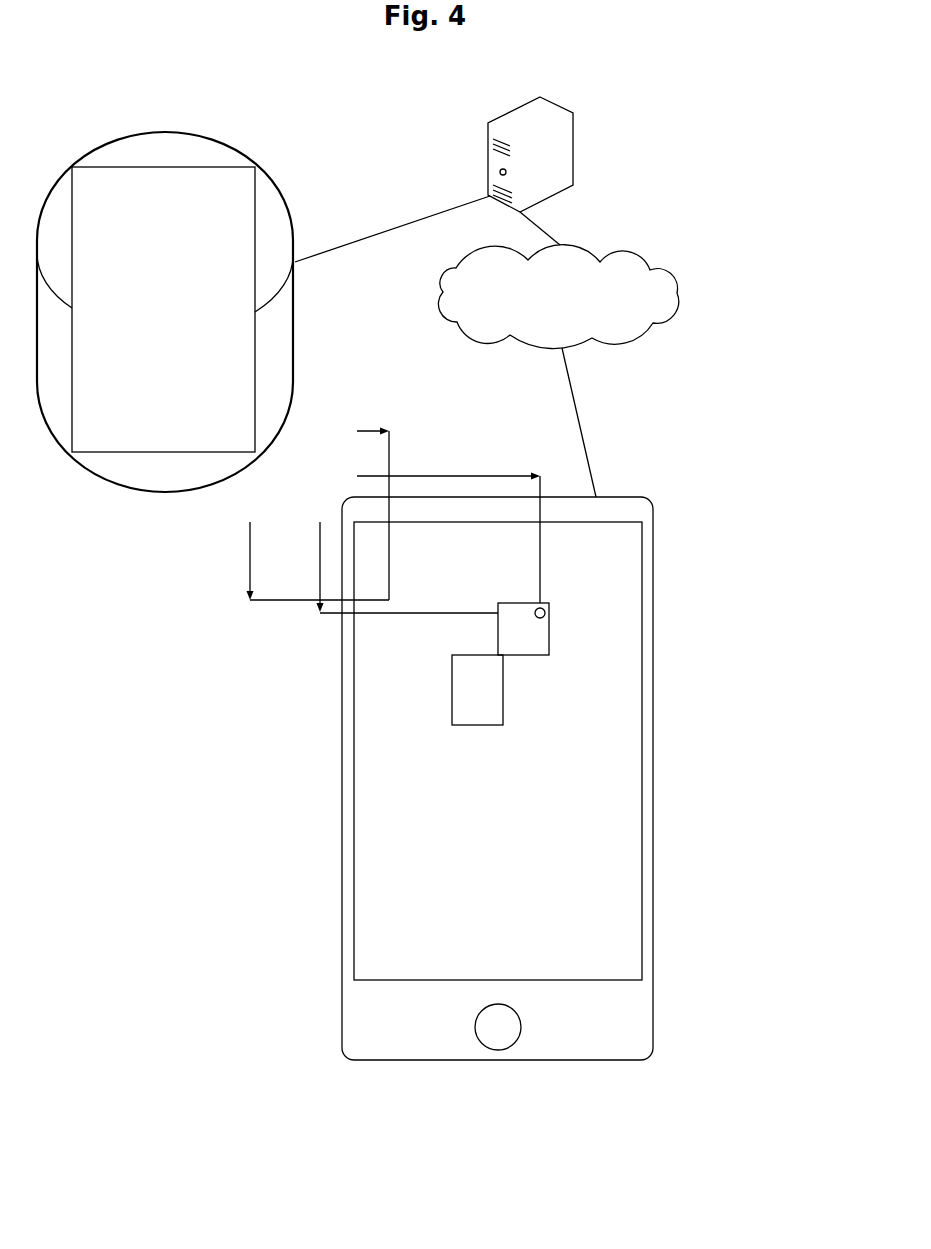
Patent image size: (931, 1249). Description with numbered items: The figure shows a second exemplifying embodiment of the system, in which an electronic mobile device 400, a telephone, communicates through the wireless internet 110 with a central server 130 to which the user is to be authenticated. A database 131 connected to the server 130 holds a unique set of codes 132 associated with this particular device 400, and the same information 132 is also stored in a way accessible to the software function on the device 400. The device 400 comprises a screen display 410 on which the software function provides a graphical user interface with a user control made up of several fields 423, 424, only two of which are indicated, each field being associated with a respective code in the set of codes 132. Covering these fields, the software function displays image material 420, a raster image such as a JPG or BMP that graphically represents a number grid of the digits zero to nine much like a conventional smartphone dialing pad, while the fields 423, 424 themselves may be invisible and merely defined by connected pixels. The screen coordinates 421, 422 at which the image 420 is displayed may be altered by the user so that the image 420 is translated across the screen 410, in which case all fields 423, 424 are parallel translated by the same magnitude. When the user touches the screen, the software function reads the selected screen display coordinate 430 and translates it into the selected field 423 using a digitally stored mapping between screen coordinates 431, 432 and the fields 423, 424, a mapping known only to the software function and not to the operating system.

The internet 110 is at (558, 297).
The central server 130 is at (530, 154).
The database 131 is at (165, 309).
The unique set of codes 132 is at (133, 453).
The electronic mobile device 400 is at (653, 757).
The screen display 410 is at (642, 828).
The image material 420 is at (568, 682).
The screen coordinate 421 is at (363, 499).
The screen coordinate 422 is at (292, 561).
The field 423 is at (550, 633).
The field 424 is at (503, 718).
The selected screen display coordinate 430 is at (545, 609).
The screen coordinate 431 is at (448, 524).
The screen coordinate 432 is at (385, 567).